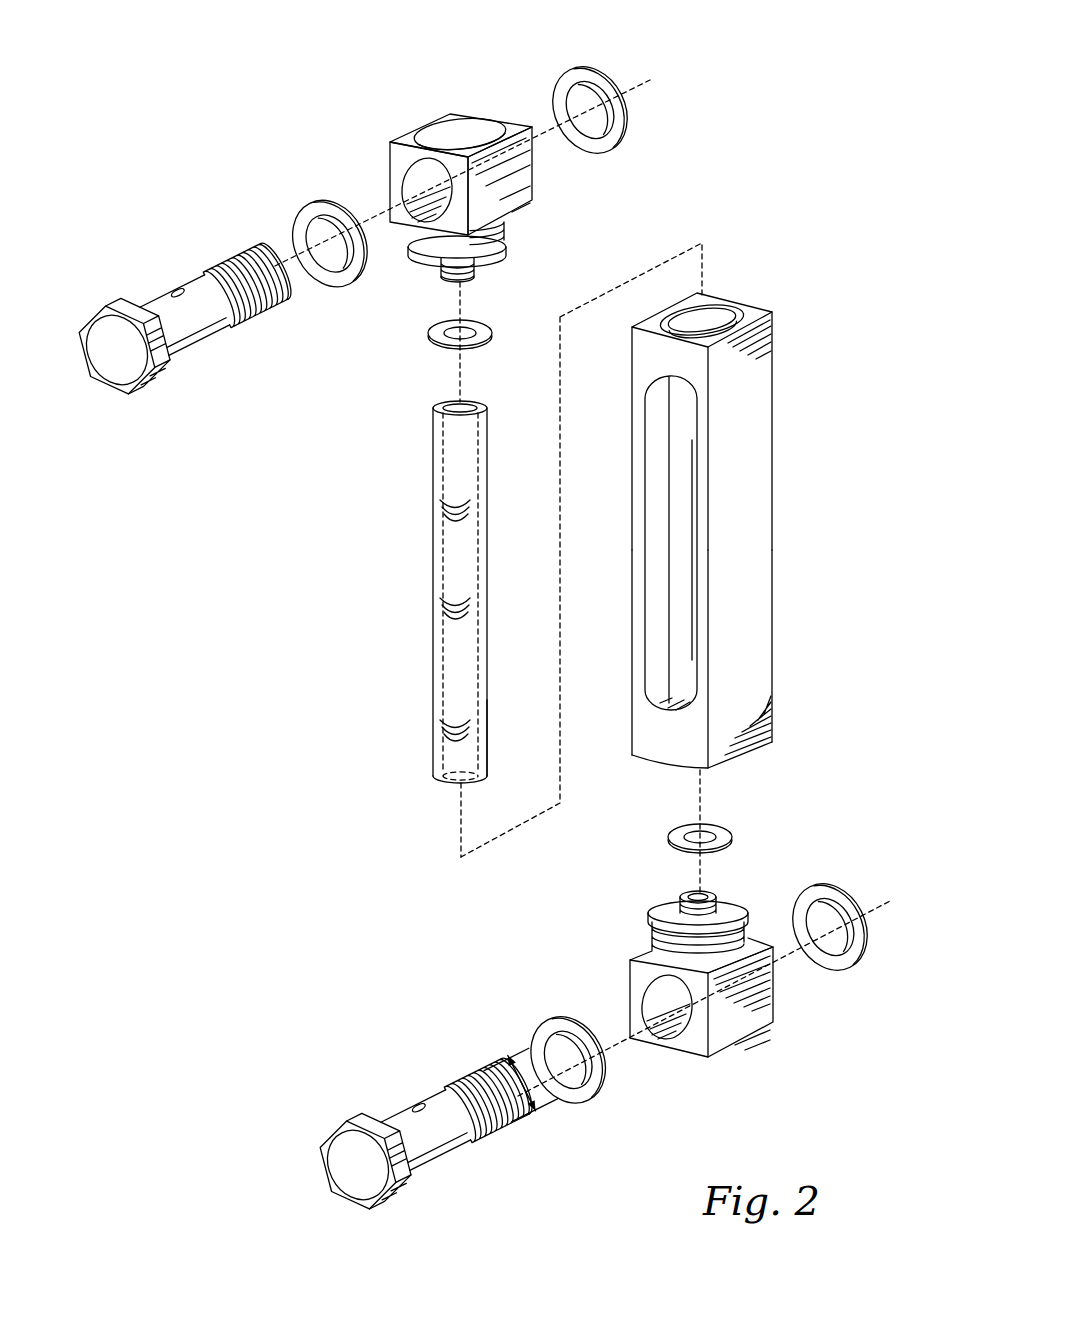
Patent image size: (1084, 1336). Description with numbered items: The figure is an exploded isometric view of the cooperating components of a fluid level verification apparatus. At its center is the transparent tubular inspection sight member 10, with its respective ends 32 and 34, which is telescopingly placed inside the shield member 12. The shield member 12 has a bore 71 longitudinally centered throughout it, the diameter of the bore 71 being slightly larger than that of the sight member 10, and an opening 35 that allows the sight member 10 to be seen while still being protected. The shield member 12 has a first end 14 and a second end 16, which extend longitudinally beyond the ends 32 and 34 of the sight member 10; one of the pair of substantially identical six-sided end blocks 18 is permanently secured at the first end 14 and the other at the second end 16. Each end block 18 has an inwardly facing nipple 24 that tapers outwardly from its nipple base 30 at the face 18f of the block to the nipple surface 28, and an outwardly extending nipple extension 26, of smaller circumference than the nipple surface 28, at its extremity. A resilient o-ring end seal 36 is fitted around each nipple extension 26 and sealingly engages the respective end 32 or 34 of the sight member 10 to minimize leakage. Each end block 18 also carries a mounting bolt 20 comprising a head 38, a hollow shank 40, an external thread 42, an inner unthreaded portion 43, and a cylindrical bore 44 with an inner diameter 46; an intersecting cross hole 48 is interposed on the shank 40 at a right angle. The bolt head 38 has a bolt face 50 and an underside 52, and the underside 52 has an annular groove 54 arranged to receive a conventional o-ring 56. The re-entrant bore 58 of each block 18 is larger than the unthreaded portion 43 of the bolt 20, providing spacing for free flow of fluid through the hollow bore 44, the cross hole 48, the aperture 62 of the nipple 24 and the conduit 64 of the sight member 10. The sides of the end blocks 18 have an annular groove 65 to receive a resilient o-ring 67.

The inspection sight member 10 is at (452, 572).
The shield member 12 is at (798, 470).
The first end 14 is at (750, 380).
The second end 16 is at (735, 692).
The end block 18 is at (405, 95).
The face of end block 18f is at (540, 200).
The mounting bolt 20 is at (135, 190).
The nipple 24 is at (415, 270).
The nipple extension 26 is at (450, 280).
The nipple surface 28 is at (487, 257).
The nipple base 30 is at (510, 225).
The end of sight member 32 is at (433, 405).
The end of sight member 34 is at (487, 770).
The opening 35 is at (680, 555).
The o-ring end seal 36 is at (433, 333).
The bolt head 38 is at (100, 310).
The hollow shank 40 is at (205, 237).
The external thread 42 is at (235, 305).
The inner unthreaded portion 43 is at (195, 318).
The cylindrical bore 44 is at (270, 300).
The inner diameter 46 is at (519, 1079).
The cross hole 48 is at (176, 287).
The bolt face 50 is at (110, 352).
The underside 52 is at (155, 370).
The annular groove 54 is at (133, 298).
The o-ring 56 is at (322, 205).
The re-entrant bore 58 is at (412, 180).
The aperture 62 is at (470, 282).
The conduit 64 is at (455, 786).
The annular groove 65 is at (512, 135).
The o-ring 67 is at (560, 90).
The bore 71 is at (718, 323).